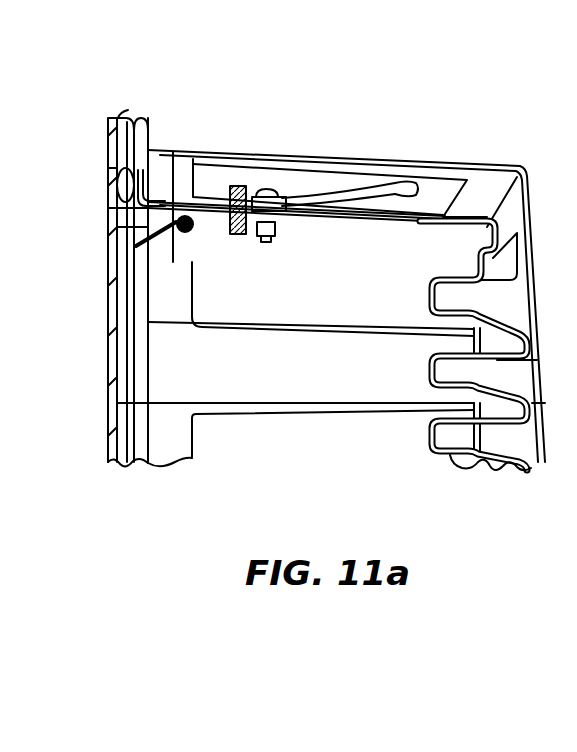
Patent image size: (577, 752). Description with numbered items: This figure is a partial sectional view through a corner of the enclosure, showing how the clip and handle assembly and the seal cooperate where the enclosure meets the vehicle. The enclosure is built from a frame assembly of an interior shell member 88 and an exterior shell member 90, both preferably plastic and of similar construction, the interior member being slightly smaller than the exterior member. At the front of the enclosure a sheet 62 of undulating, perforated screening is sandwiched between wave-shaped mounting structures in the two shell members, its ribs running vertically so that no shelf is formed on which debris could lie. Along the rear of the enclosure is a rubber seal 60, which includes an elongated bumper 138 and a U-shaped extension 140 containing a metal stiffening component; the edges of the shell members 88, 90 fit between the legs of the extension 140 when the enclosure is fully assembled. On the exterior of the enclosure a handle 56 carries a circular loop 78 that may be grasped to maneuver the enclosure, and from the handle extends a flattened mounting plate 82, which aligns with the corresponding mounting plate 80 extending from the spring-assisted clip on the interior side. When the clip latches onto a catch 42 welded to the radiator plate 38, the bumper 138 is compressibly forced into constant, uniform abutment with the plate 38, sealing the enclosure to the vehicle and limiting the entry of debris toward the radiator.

The seal 60 is at (133, 86).
The bumper 138 is at (118, 118).
The U-shaped extension 140 is at (150, 120).
The interior shell member 88 is at (170, 205).
The mounting plate 82 is at (283, 193).
The circular loop 78 is at (356, 187).
The handle 56 is at (405, 183).
The radiator plate 38 is at (108, 220).
The catch 42 is at (133, 218).
The exterior shell member 90 is at (170, 232).
The mounting plate 80 is at (278, 222).
The sheet of undulating screening 62 is at (502, 467).